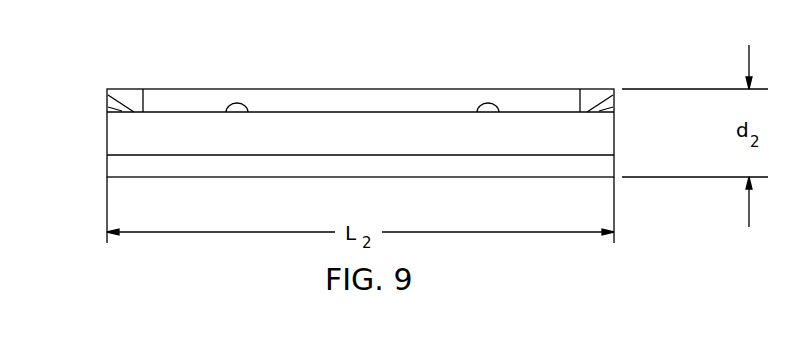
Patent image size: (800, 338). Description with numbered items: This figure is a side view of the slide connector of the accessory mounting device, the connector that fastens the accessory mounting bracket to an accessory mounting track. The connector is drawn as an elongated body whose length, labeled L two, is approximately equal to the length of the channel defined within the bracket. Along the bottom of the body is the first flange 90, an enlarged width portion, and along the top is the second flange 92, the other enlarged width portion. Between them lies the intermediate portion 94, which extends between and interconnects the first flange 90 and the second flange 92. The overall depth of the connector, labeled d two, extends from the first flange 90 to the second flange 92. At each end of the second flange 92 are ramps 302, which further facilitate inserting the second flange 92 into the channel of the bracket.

The first flange 90 is at (355, 178).
The second flange 92 is at (362, 89).
The intermediate portion 94 is at (107, 139).
The ramps 302 is at (107, 109).